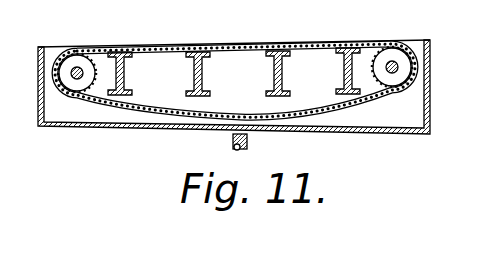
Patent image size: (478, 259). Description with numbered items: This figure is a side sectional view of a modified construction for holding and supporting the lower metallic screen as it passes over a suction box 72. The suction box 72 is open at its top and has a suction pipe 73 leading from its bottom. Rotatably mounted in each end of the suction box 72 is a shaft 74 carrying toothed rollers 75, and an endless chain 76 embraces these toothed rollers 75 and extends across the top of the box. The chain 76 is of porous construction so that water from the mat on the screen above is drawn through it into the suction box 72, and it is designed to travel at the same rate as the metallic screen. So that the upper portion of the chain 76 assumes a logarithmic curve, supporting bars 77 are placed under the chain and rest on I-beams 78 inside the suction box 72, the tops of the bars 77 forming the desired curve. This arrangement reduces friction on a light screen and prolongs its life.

The suction box 72 is at (429, 103).
The suction pipe 73 is at (233, 142).
The shaft 74 is at (77, 67).
The toothed roller 75 is at (66, 88).
The endless chain 76 is at (286, 37).
The supporting bar 77 is at (153, 52).
The I-beam 78 is at (125, 74).